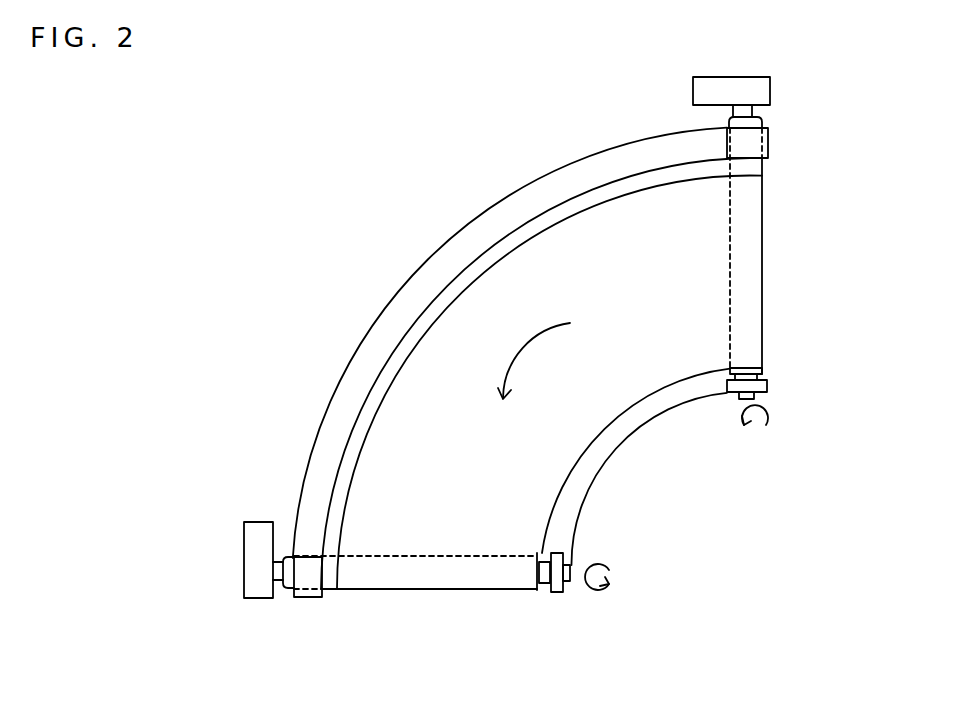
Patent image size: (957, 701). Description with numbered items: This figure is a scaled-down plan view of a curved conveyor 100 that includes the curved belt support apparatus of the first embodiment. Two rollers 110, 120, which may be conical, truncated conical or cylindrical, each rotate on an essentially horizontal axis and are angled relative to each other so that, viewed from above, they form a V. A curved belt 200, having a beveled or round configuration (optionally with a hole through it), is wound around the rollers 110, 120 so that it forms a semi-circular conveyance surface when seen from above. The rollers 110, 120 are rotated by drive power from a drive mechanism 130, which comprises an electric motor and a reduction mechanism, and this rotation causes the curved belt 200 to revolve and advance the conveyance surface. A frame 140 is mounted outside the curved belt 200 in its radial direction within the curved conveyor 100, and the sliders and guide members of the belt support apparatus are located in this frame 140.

The curved conveyor 100 is at (208, 128).
The roller 110 is at (440, 590).
The roller 120 is at (743, 252).
The drive mechanism 130 is at (220, 538).
The frame 140 is at (588, 493).
The curved belt 200 is at (563, 420).